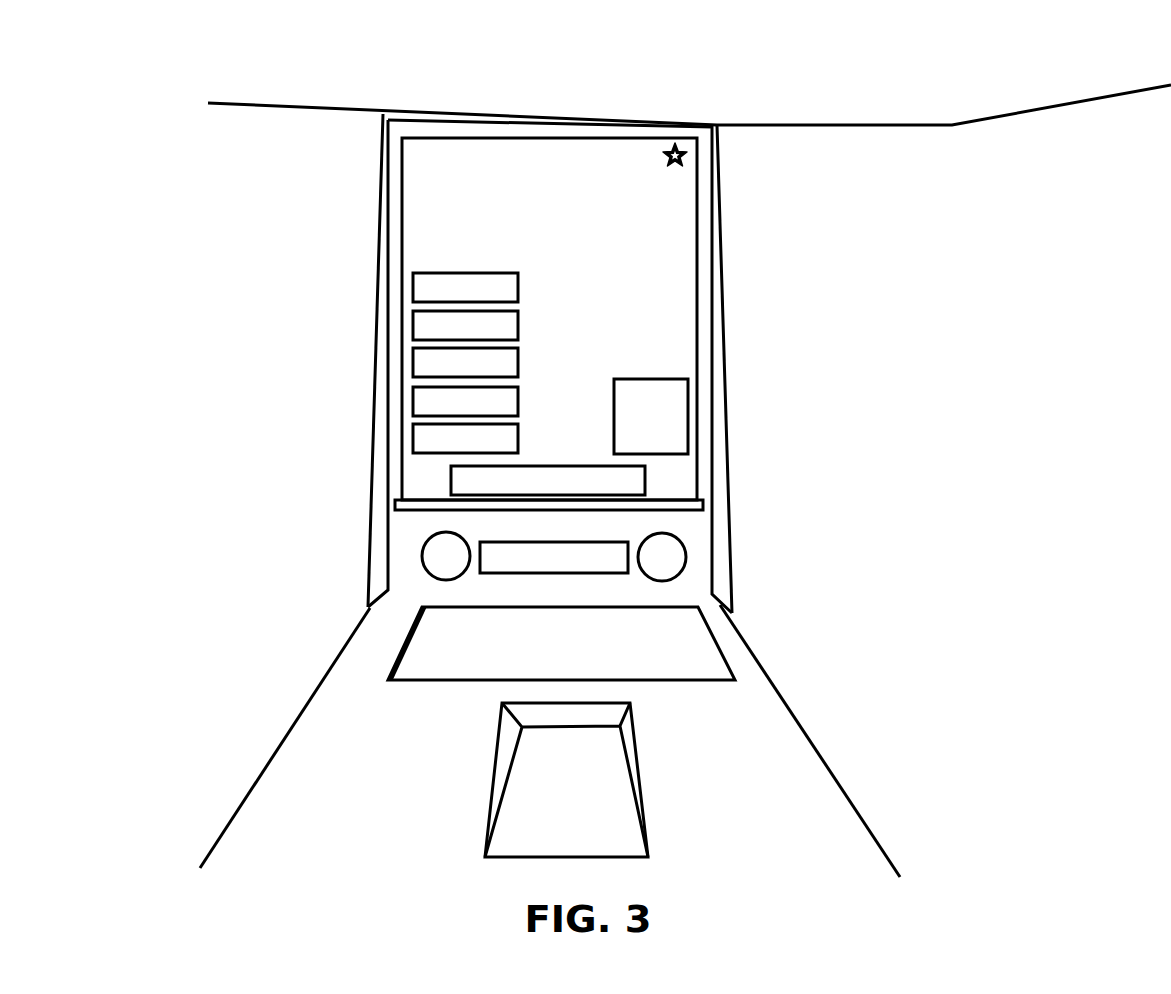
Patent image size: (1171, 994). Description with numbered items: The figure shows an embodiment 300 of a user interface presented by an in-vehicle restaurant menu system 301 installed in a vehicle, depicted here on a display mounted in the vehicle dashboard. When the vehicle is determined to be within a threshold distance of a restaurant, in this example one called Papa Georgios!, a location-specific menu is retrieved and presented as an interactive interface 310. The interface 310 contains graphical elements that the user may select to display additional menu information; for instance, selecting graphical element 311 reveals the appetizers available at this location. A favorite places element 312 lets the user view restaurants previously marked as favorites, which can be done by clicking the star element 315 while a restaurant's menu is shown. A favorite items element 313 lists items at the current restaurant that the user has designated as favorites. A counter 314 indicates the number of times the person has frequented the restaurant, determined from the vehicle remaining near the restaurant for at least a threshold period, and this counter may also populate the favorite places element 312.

The embodiment 300 is at (182, 66).
The in-vehicle restaurant menu system 301 is at (408, 113).
The interface 310 is at (547, 137).
The graphical element 311 is at (518, 317).
The favorite places element 312 is at (625, 378).
The favorite items element 313 is at (542, 464).
The counter 314 is at (637, 287).
The star element 315 is at (673, 144).